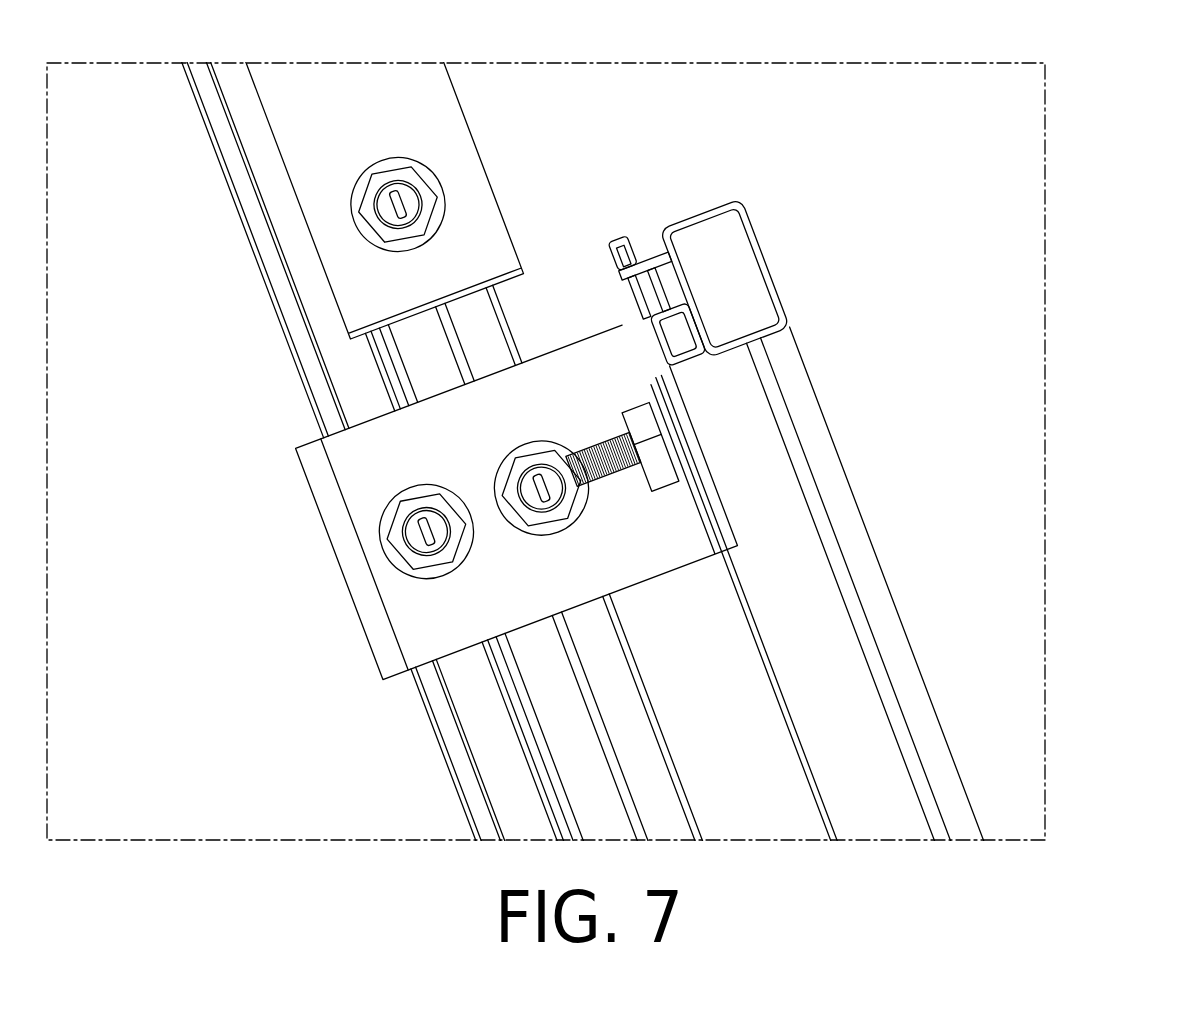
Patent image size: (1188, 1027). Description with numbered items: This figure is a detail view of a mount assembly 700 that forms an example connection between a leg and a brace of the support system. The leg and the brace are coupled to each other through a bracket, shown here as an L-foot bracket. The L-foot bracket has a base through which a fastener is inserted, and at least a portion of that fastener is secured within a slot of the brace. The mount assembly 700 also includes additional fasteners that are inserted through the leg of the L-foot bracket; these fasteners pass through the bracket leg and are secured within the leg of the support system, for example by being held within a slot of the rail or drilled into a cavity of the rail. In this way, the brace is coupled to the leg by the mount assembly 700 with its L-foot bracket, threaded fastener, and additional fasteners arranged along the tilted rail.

The mount assembly 700 is at (1074, 57).